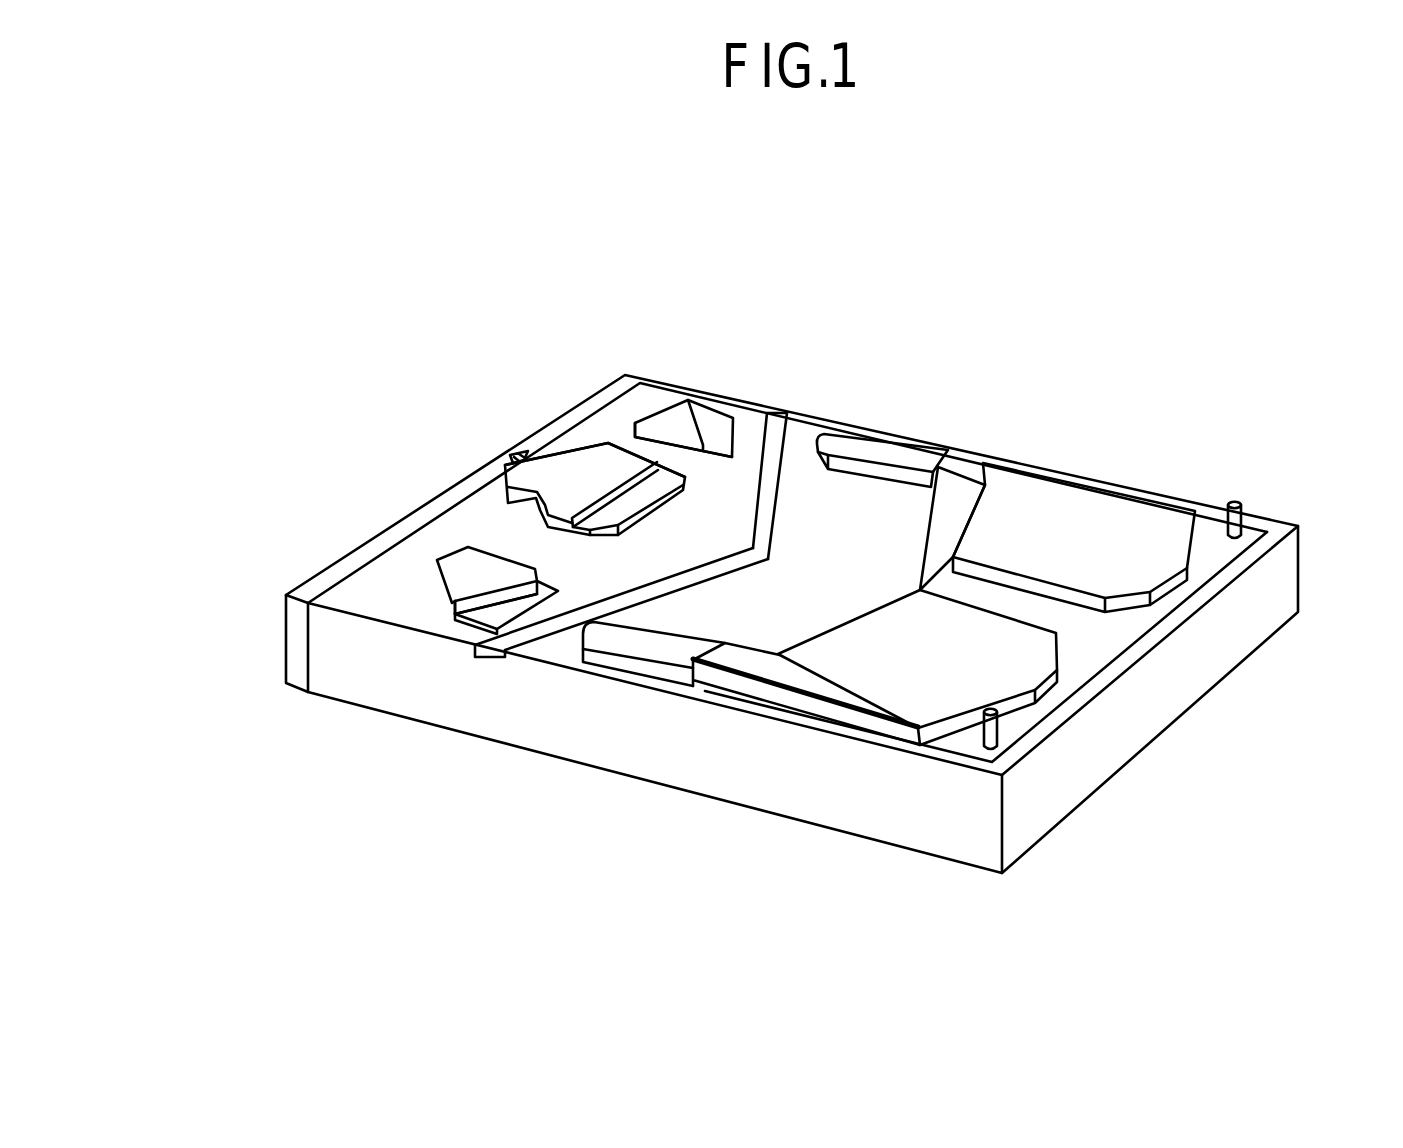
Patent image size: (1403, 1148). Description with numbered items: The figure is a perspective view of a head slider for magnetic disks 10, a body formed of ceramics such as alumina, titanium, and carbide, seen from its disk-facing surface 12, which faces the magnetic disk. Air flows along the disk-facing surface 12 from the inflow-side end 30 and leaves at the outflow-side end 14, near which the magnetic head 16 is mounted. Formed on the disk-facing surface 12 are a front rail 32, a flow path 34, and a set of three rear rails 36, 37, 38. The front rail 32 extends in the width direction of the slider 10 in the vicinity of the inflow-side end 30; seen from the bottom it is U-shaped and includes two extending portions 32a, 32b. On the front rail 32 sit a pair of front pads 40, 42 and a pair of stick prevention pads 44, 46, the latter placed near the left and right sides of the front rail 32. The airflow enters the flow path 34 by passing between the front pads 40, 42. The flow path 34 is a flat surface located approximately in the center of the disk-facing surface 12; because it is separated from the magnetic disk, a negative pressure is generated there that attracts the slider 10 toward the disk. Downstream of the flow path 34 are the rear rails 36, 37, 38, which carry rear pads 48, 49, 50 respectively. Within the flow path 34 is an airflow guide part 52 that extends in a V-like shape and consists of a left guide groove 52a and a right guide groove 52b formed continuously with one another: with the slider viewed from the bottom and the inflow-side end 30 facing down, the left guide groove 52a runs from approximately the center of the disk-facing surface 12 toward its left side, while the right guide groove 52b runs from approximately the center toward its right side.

The head slider for magnetic disks 10 is at (867, 228).
The disk-facing surface 12 is at (812, 435).
The outflow-side end 14 is at (325, 569).
The magnetic head 16 is at (512, 456).
The inflow-side end 30 is at (1087, 784).
The front rail 32 is at (1097, 633).
The extending portion 32a is at (618, 643).
The extending portion 32b is at (895, 457).
The flow path 34 is at (928, 523).
The rear rail 36 is at (478, 617).
The rear rail 37 is at (635, 507).
The rear rail 38 is at (705, 418).
The front pad 40 is at (757, 668).
The front pad 42 is at (1073, 490).
The stick prevention pad 44 is at (992, 737).
The stick prevention pad 46 is at (1240, 508).
The rear pad 48 is at (458, 560).
The rear pad 49 is at (567, 470).
The rear pad 50 is at (660, 420).
The airflow guide part 52 is at (748, 574).
The left guide groove 52a is at (663, 576).
The right guide groove 52b is at (764, 458).